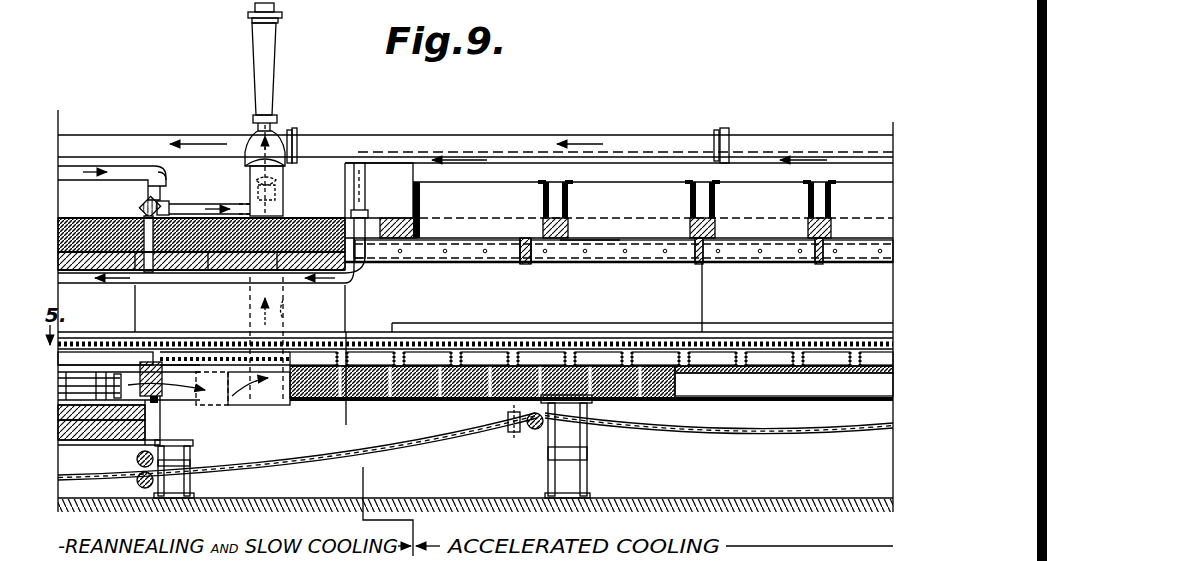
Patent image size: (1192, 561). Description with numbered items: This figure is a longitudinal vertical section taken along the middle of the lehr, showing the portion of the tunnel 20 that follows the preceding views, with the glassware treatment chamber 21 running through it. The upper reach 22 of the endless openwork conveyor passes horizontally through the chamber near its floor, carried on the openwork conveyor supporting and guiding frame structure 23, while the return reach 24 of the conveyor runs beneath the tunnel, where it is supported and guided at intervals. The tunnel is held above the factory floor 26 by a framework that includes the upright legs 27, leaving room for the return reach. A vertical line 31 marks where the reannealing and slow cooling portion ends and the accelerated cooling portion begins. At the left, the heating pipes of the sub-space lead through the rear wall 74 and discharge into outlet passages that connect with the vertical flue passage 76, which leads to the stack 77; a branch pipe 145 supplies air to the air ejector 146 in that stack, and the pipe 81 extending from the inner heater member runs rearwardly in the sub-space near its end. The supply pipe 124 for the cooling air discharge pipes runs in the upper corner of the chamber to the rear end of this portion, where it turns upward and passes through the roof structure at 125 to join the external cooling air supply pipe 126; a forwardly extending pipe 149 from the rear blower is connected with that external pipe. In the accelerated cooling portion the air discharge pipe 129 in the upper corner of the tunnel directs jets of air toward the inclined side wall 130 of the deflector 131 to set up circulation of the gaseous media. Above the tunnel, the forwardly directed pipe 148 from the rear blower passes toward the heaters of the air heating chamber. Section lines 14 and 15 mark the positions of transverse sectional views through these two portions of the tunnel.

The section line 14 is at (346, 192).
The section line 15 is at (883, 322).
The tunnel 20 is at (596, 180).
The glassware treatment chamber 21 is at (514, 297).
The upper reach of the conveyor 22 is at (640, 342).
The conveyor supporting and guiding frame structure 23 is at (712, 357).
The return reach of the conveyor 24 is at (463, 437).
The factory floor 26 is at (758, 498).
The upright legs 27 is at (143, 454).
The vertical line 31 is at (415, 526).
The rear wall 74 is at (160, 398).
The vertical flue passage 76 is at (283, 313).
The stack 77 is at (272, 152).
The pipe 81 is at (85, 390).
The supply pipe 124 is at (372, 284).
The roof structure passage 125 is at (393, 216).
The external cooling air supply pipe 126 is at (383, 165).
The air discharge pipe 129 is at (527, 250).
The inclined side wall 130 is at (643, 252).
The deflector 131 is at (575, 250).
The branch pipe 145 is at (97, 172).
The air ejector 146 is at (252, 195).
The forwardly directed pipe 148 is at (452, 144).
The forwardly extending pipe 149 is at (740, 162).